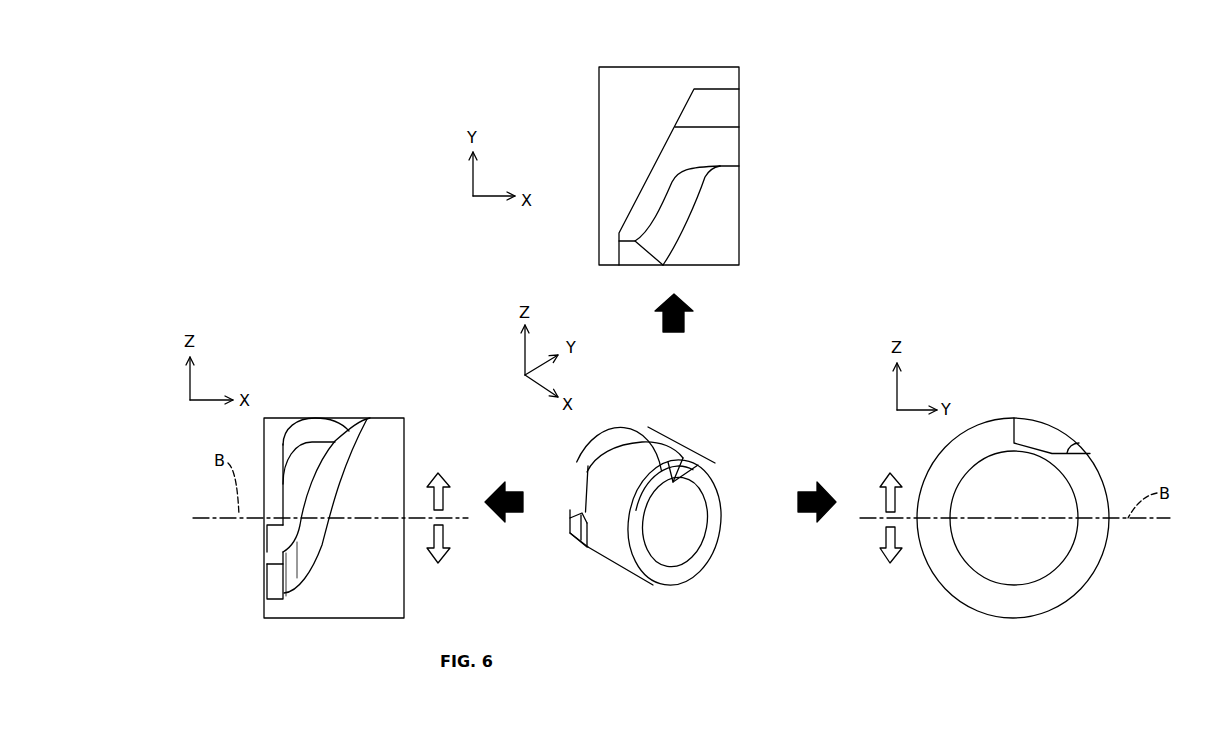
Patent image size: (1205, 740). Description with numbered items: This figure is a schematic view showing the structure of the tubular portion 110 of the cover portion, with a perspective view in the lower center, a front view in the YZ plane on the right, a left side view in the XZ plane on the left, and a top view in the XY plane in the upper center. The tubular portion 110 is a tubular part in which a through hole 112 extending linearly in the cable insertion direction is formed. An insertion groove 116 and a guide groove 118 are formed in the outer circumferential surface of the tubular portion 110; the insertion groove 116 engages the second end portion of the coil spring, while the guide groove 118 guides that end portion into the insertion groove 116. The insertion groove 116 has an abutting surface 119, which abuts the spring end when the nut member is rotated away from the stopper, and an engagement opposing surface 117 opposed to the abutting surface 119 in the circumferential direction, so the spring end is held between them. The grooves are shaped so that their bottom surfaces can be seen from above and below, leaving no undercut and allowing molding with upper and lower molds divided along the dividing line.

The tubular portion 110 is at (616, 56).
The through hole 112 is at (683, 532).
The insertion groove 116 is at (278, 550).
The engagement opposing surface 117 is at (278, 526).
The guide groove 118 is at (687, 147).
The abutting surface 119 is at (272, 600).